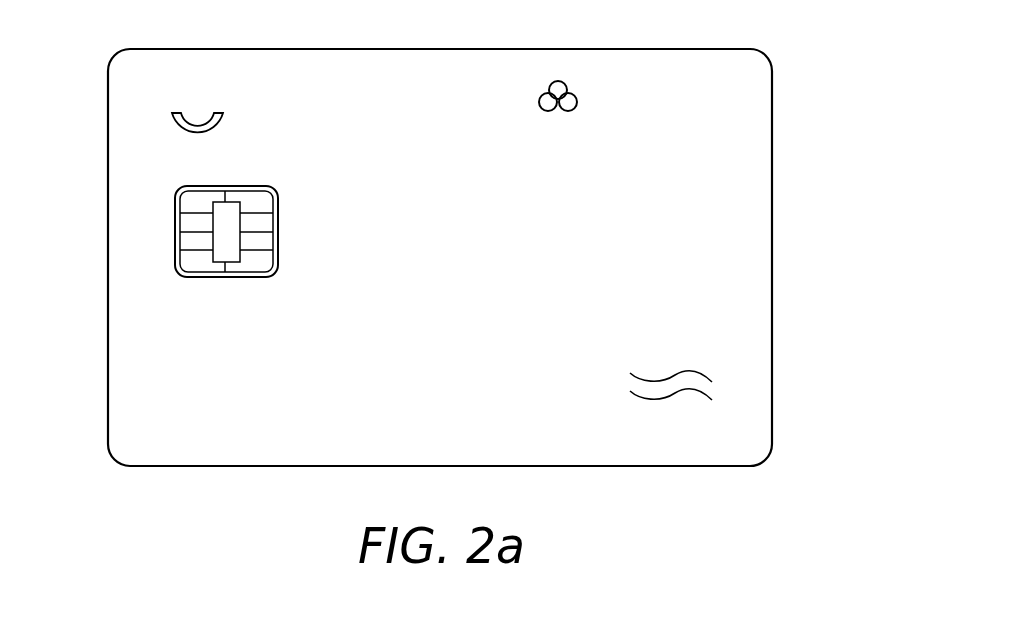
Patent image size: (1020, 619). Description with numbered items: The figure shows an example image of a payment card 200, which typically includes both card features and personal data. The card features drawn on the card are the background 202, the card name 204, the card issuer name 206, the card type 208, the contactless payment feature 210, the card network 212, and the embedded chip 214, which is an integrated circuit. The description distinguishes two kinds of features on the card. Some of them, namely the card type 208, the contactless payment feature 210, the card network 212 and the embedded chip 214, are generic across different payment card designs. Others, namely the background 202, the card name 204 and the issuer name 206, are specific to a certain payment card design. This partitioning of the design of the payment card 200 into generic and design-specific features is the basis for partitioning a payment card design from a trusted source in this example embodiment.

The payment card 200 is at (90, 358).
The background 202 is at (459, 92).
The card name 204 is at (142, 97).
The card issuer name 206 is at (752, 93).
The card type 208 is at (722, 175).
The contactless payment feature 210 is at (735, 250).
The card network 212 is at (745, 418).
The embedded chip 214 is at (193, 222).